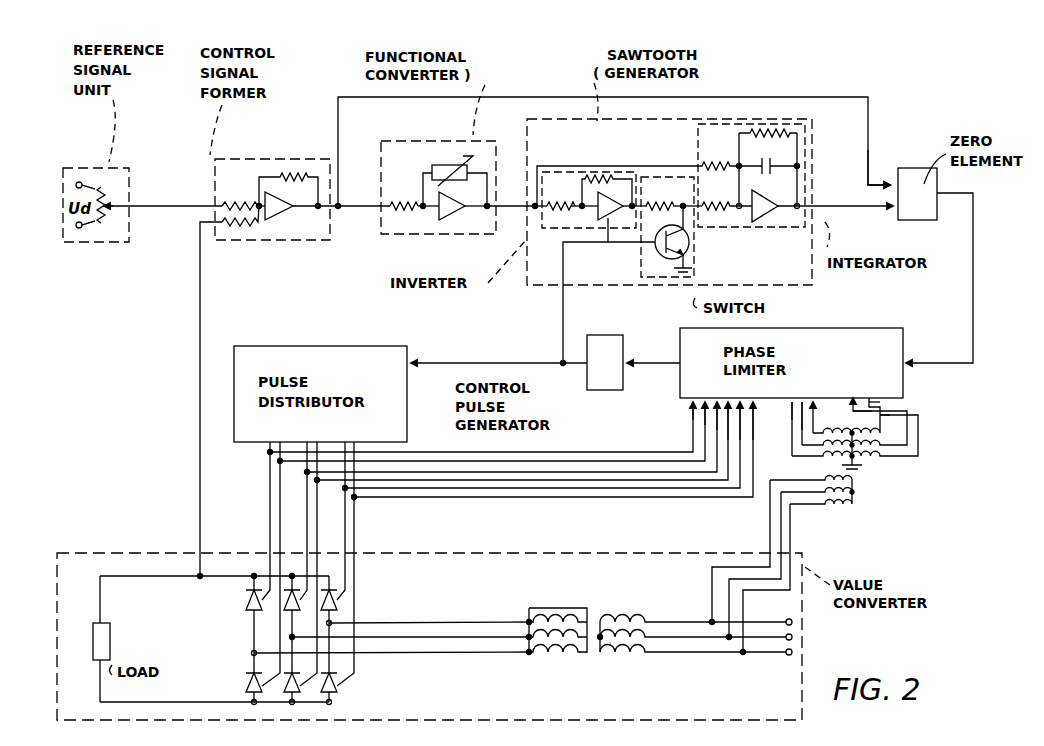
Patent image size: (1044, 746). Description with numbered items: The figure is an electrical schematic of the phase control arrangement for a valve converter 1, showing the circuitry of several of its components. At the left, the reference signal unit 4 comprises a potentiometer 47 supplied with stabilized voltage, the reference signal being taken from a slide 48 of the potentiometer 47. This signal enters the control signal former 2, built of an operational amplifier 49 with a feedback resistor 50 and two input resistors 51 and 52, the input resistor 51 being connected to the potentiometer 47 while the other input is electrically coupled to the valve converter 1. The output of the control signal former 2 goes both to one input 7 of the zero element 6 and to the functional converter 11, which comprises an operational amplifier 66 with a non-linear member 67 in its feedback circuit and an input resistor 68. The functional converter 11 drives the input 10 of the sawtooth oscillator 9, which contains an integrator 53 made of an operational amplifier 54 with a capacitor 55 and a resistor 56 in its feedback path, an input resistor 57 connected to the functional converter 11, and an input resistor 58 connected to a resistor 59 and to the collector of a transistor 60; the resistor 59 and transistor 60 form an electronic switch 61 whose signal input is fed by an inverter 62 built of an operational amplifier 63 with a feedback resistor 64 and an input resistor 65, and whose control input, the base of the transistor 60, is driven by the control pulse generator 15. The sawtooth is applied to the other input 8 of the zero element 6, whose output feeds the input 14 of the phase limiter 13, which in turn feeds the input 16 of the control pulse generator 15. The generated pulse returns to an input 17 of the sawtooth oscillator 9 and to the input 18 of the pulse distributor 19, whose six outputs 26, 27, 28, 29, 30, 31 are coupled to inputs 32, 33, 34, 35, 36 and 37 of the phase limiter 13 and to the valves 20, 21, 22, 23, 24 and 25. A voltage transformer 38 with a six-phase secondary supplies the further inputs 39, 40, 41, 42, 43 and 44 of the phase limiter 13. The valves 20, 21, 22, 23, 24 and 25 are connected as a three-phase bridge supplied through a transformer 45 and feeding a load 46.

The valve converter 1 is at (429, 616).
The control signal former 2 is at (272, 198).
The reference signal unit 4 is at (74, 166).
The zero element 6 is at (922, 168).
The input of zero element 7 is at (890, 180).
The input of zero element 8 is at (884, 214).
The sawtooth oscillator 9 is at (691, 237).
The input of sawtooth oscillator 10 is at (511, 193).
The functional converter 11 is at (438, 188).
The phase limiter 13 is at (856, 325).
The input of phase limiter 14 is at (913, 361).
The control pulse generator 15 is at (602, 335).
The input of control pulse generator 16 is at (636, 360).
The input of sawtooth oscillator 17 is at (563, 296).
The input of pulse distributor 18 is at (418, 360).
The pulse distributor 19 is at (318, 344).
The valve 20 is at (246, 606).
The valve 21 is at (334, 684).
The valve 22 is at (294, 606).
The valve 23 is at (246, 678).
The valve 24 is at (336, 600).
The valve 25 is at (301, 686).
The output of pulse distributor 26 is at (266, 448).
The output of pulse distributor 27 is at (356, 479).
The output of pulse distributor 28 is at (283, 492).
The output of pulse distributor 29 is at (305, 450).
The output of pulse distributor 30 is at (345, 497).
The output of pulse distributor 31 is at (324, 467).
The input of phase limiter 32 is at (692, 408).
The input of phase limiter 33 is at (753, 482).
The input of phase limiter 34 is at (717, 408).
The input of phase limiter 35 is at (705, 408).
The input of phase limiter 36 is at (737, 480).
The input of phase limiter 37 is at (717, 480).
The voltage transformer 38 is at (855, 488).
The input of phase limiter 39 is at (880, 403).
The input of phase limiter 40 is at (872, 416).
The input of phase limiter 41 is at (868, 420).
The input of phase limiter 42 is at (792, 404).
The input of phase limiter 43 is at (802, 408).
The input of phase limiter 44 is at (813, 408).
The transformer 45 is at (596, 608).
The load 46 is at (110, 636).
The potentiometer 47 is at (104, 189).
The slide 48 is at (108, 218).
The operational amplifier 49 is at (286, 214).
The feedback resistor 50 is at (288, 175).
The input resistor 51 is at (240, 191).
The input resistor 52 is at (238, 240).
The integrator 53 is at (692, 193).
The operational amplifier 54 is at (768, 218).
The capacitor 55 is at (768, 169).
The resistor 56 is at (778, 128).
The input resistor 57 is at (637, 169).
The input resistor 58 is at (720, 195).
The resistor 59 is at (658, 201).
The transistor 60 is at (665, 258).
The electronic switch 61 is at (693, 250).
The inverter 62 is at (583, 208).
The operational amplifier 63 is at (608, 218).
The feedback resistor 64 is at (600, 178).
The input resistor 65 is at (560, 195).
The operational amplifier 66 is at (455, 218).
The non-linear member 67 is at (443, 165).
The input resistor 68 is at (404, 195).